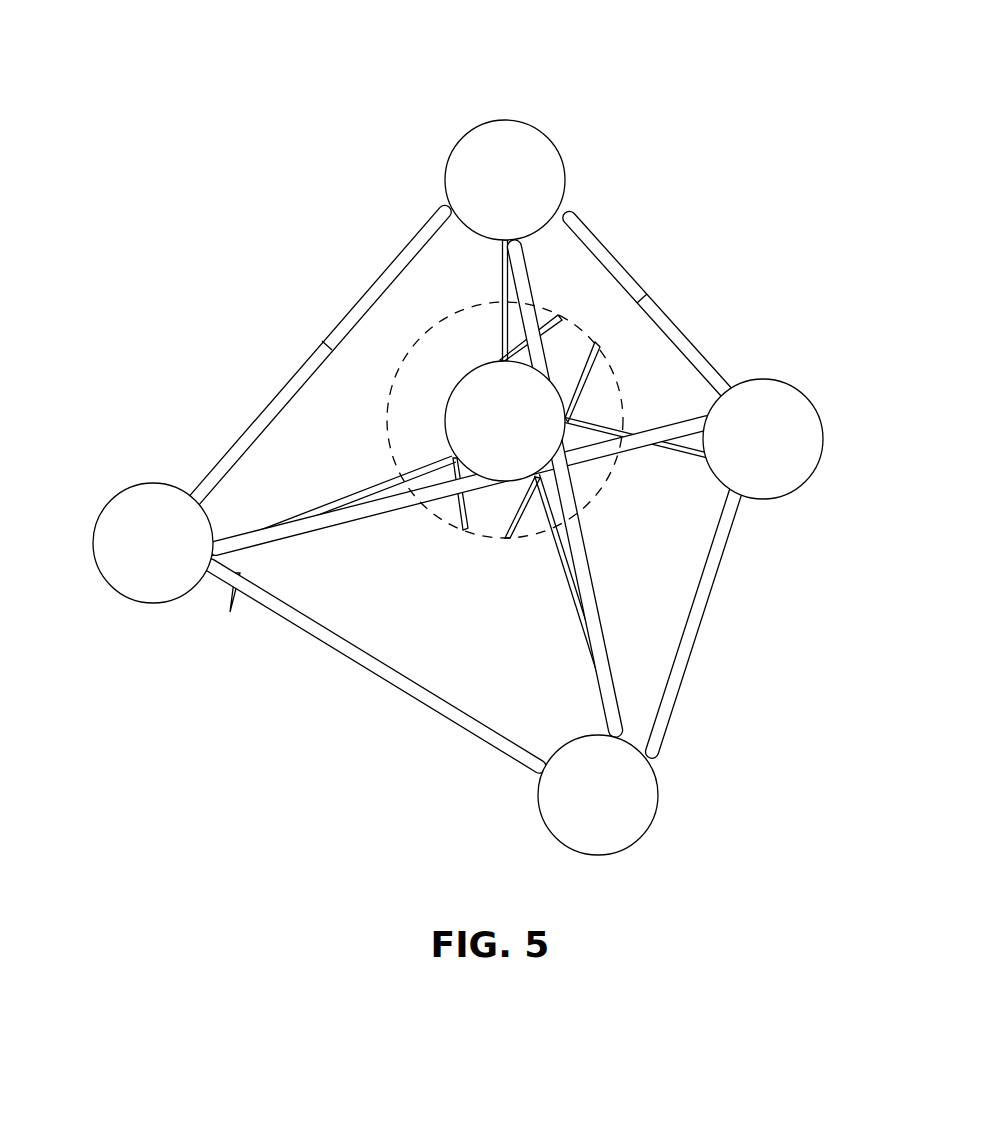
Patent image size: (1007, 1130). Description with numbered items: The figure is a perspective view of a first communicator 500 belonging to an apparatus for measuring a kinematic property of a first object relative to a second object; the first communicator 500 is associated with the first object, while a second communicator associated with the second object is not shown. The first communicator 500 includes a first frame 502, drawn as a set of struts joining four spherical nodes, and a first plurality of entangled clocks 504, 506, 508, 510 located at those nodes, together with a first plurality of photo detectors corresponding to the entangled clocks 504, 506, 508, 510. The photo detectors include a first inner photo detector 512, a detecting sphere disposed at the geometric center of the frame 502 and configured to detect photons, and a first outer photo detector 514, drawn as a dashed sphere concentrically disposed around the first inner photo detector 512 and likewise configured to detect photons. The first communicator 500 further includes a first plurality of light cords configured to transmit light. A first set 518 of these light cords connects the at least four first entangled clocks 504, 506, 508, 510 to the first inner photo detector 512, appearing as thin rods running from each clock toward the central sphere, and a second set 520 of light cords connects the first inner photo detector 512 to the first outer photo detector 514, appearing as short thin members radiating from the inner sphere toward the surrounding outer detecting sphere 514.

The first communicator 500 is at (511, 46).
The first frame 502 is at (465, 469).
The first entangled clock 504 is at (777, 410).
The first entangled clock 506 is at (626, 807).
The first entangled clock 508 is at (153, 583).
The first entangled clock 510 is at (538, 175).
The first inner photo detector 512 is at (474, 392).
The first outer photo detector 514 is at (475, 420).
The first set of light cords 518 is at (474, 462).
The second set of light cords 520 is at (449, 464).